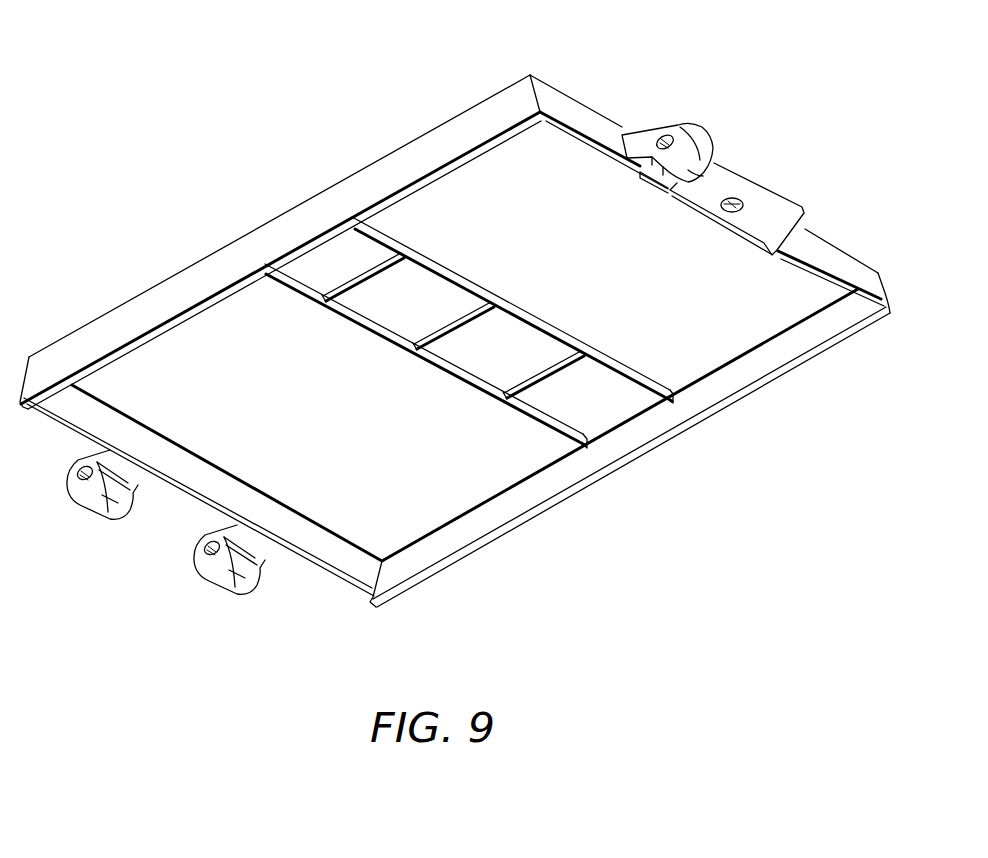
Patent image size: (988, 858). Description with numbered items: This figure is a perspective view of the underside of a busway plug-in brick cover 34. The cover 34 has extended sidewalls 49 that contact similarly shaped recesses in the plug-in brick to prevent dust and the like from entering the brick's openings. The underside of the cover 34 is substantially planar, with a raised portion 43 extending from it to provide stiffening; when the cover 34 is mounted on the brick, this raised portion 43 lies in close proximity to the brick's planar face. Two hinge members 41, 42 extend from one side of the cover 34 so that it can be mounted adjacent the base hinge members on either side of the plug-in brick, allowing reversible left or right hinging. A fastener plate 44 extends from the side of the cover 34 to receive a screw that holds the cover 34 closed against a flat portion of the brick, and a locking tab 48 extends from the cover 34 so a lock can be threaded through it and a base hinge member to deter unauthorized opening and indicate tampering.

The cover 34 is at (455, 328).
The hinge member 41 is at (97, 500).
The hinge member 42 is at (230, 577).
The raised portion 43 is at (418, 358).
The fastener plate 44 is at (728, 182).
The locking tab 48 is at (700, 148).
The extended sidewalls 49 is at (446, 175).